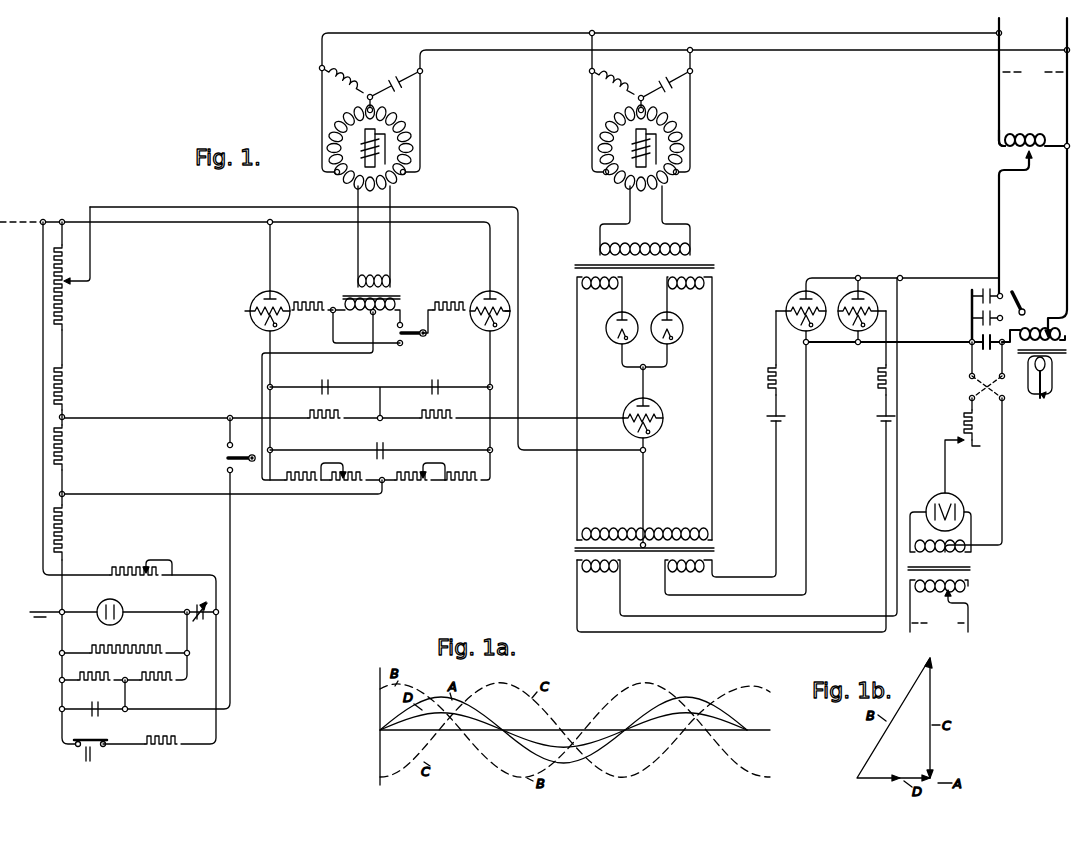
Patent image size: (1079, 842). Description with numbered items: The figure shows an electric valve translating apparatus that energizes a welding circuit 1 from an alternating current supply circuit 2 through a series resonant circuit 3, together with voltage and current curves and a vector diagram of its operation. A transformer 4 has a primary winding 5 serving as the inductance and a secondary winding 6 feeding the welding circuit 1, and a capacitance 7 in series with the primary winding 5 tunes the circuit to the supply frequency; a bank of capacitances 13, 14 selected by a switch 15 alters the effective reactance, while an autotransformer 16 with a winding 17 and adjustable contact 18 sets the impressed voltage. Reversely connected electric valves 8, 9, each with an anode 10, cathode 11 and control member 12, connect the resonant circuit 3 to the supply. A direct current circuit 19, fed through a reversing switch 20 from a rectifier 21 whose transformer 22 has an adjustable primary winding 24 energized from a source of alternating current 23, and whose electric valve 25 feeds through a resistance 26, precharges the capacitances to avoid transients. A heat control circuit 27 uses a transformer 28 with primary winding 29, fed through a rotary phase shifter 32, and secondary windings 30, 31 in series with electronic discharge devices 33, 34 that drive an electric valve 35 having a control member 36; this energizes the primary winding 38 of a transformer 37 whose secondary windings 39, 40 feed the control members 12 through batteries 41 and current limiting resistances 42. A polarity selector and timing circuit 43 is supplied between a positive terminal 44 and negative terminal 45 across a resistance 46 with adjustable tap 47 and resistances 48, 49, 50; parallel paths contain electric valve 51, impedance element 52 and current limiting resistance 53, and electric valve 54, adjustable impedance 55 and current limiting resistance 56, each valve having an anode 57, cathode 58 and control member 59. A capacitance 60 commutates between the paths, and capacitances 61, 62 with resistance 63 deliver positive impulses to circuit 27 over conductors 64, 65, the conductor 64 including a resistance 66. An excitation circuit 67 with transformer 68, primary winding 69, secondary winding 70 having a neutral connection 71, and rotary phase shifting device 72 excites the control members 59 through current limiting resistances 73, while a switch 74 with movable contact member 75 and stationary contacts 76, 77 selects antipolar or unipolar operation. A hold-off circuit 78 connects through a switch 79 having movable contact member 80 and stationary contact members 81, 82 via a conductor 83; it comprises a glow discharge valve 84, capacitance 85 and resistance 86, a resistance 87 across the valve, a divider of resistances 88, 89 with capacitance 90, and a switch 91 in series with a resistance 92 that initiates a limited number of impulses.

The welding circuit 1 is at (1049, 394).
The alternating current supply circuit 2 is at (1033, 73).
The resonant circuit 3 is at (1049, 315).
The transformer 4 is at (1020, 356).
The primary winding 5 is at (1033, 330).
The secondary winding 6 is at (1054, 370).
The capacitance 7 is at (972, 339).
The electric valve 8 is at (807, 305).
The electric valve 9 is at (862, 301).
The anode 10 is at (800, 292).
The cathode 11 is at (800, 340).
The control member 12 is at (848, 330).
The capacitance 13 is at (975, 293).
The capacitance 14 is at (970, 317).
The switch 15 is at (1026, 296).
The autotransformer 16 is at (1037, 138).
The winding 17 is at (1002, 141).
The adjustable contact 18 is at (1031, 158).
The direct current circuit 19 is at (986, 399).
The reversing switch 20 is at (986, 370).
The rectifier 21 is at (1020, 535).
The transformer 22 is at (974, 570).
The source of alternating current 23 is at (939, 624).
The adjustable primary winding 24 is at (939, 606).
The electric valve 25 is at (952, 502).
The resistance 26 is at (960, 429).
The heat control circuit 27 is at (674, 475).
The transformer 28 is at (713, 266).
The primary winding 29 is at (645, 220).
The secondary winding 30 is at (599, 408).
The secondary winding 31 is at (689, 408).
The rotary phase shifter 32 is at (674, 177).
The electronic discharge device 33 is at (606, 330).
The electronic discharge device 34 is at (682, 332).
The electric valve 35 is at (660, 410).
The control member 36 is at (660, 426).
The transformer 37 is at (716, 549).
The primary winding 38 is at (648, 536).
The secondary winding 39 is at (737, 455).
The secondary winding 40 is at (735, 468).
The battery 41 is at (878, 418).
The current limiting resistance 42 is at (878, 380).
The polarity selector and timing circuit 43 is at (180, 375).
The positive terminal 44 is at (245, 247).
The negative terminal 45 is at (44, 623).
The resistance 46 is at (65, 311).
The adjustable tap 47 is at (72, 284).
The resistance 48 is at (66, 372).
The resistance 49 is at (66, 429).
The resistance 50 is at (66, 529).
The electric valve 51 is at (254, 297).
The impedance element 52 is at (344, 468).
The current limiting resistance 53 is at (303, 477).
The electric valve 54 is at (482, 297).
The adjustable impedance 55 is at (412, 483).
The current limiting resistance 56 is at (460, 483).
The anode 57 is at (260, 257).
The cathode 58 is at (286, 402).
The control member 59 is at (365, 300).
The capacitance 60 is at (383, 445).
The capacitance 61 is at (324, 380).
The capacitance 62 is at (438, 382).
The resistance 63 is at (324, 428).
The conductor 64 is at (531, 420).
The conductor 65 is at (366, 341).
The resistance 66 is at (440, 418).
The excitation circuit 67 is at (424, 265).
The transformer 68 is at (345, 294).
The primary winding 69 is at (374, 273).
The secondary winding 70 is at (369, 315).
The electrical neutral connection 71 is at (329, 394).
The rotary phase shifting device 72 is at (404, 177).
The current limiting resistance 73 is at (378, 309).
The switch 74 is at (423, 338).
The movable contact member 75 is at (430, 332).
The stationary contact 76 is at (410, 317).
The stationary contact 77 is at (371, 337).
The hold-off circuit 78 is at (260, 675).
The switch 79 is at (252, 437).
The movable contact member 80 is at (250, 467).
The stationary contact member 81 is at (226, 444).
The stationary contact member 82 is at (228, 469).
The conductor 83 is at (230, 542).
The glow discharge valve 84 is at (120, 604).
The capacitance 85 is at (199, 606).
The resistance 86 is at (136, 573).
The resistance 87 is at (129, 654).
The resistance 88 is at (92, 680).
The resistance 89 is at (154, 680).
The capacitance 90 is at (96, 713).
The switch 91 is at (92, 755).
The resistance 92 is at (140, 751).